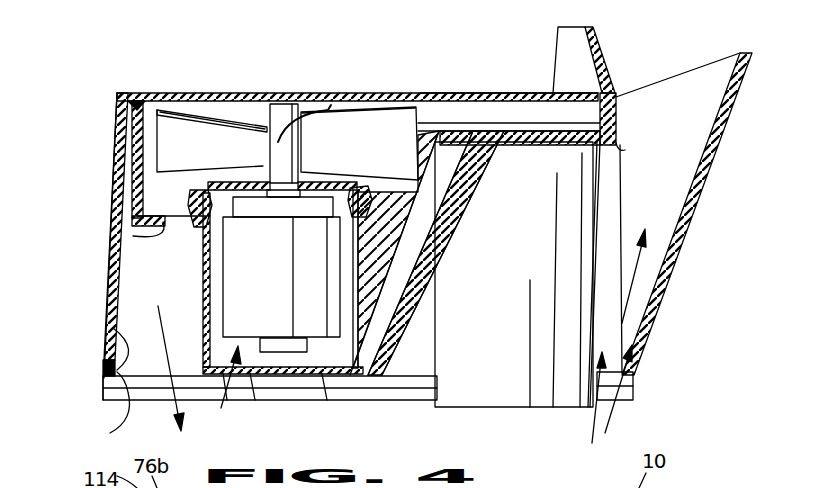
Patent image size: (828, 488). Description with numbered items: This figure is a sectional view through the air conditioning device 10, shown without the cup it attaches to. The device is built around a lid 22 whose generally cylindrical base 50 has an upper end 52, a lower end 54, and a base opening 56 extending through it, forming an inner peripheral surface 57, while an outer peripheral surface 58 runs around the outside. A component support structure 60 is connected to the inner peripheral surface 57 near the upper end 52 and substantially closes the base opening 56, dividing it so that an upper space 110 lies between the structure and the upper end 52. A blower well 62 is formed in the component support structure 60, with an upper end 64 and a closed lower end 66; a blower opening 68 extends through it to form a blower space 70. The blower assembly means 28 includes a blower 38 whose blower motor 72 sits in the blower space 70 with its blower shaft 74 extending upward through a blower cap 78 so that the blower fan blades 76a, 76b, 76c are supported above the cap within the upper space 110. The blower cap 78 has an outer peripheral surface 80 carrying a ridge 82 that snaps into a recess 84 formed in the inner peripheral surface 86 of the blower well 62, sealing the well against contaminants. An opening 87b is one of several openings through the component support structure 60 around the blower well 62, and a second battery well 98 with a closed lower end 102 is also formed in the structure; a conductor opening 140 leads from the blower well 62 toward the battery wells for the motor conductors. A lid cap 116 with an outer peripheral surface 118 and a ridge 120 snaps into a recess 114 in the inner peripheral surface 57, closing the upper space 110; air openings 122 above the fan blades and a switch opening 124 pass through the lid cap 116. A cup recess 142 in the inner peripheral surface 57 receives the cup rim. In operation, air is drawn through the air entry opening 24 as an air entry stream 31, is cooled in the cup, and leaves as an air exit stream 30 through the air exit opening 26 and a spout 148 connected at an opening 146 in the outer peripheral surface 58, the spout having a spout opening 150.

The air conditioning device 10 is at (112, 94).
The lid 22 is at (113, 201).
The air entry opening 24 is at (140, 262).
The air exit opening 26 is at (595, 403).
The blower assembly means 28 is at (226, 196).
The air exit stream 30 is at (629, 273).
The air entry stream 31 is at (174, 367).
The blower 38 is at (223, 280).
The base 50 is at (113, 286).
The upper end 52 is at (124, 92).
The lower end 54 is at (106, 398).
The base opening 56 is at (105, 415).
The inner peripheral surface 57 is at (110, 340).
The outer peripheral surface 58 is at (113, 315).
The component support structure 60 is at (162, 162).
The blower well 62 is at (250, 380).
The upper end 64 is at (207, 195).
The lower end 66 is at (319, 372).
The blower opening 68 is at (200, 307).
The blower space 70 is at (225, 392).
The blower motor 72 is at (332, 306).
The blower shaft 74 is at (296, 192).
The blower fan blade 76a is at (246, 110).
The blower fan blade 76b is at (317, 106).
The blower fan blade 76c is at (358, 112).
The blower cap 78 is at (332, 165).
The outer peripheral surface 80 is at (364, 184).
The ridge 82 is at (195, 220).
The recess 84 is at (228, 215).
The inner peripheral surface 86 is at (223, 316).
The opening 87b is at (118, 235).
The second battery well 98 is at (530, 395).
The lower end 102 is at (456, 409).
The upper space 110 is at (251, 108).
The recess 114 is at (142, 100).
The lid cap 116 is at (425, 93).
The outer peripheral surface 118 is at (132, 93).
The ridge 120 is at (620, 97).
The air opening 122 is at (219, 93).
The switch opening 124 is at (494, 93).
The conductor opening 140 is at (450, 188).
The cup recess 142 is at (110, 380).
The opening 146 is at (624, 147).
The spout 148 is at (709, 196).
The spout opening 150 is at (714, 140).